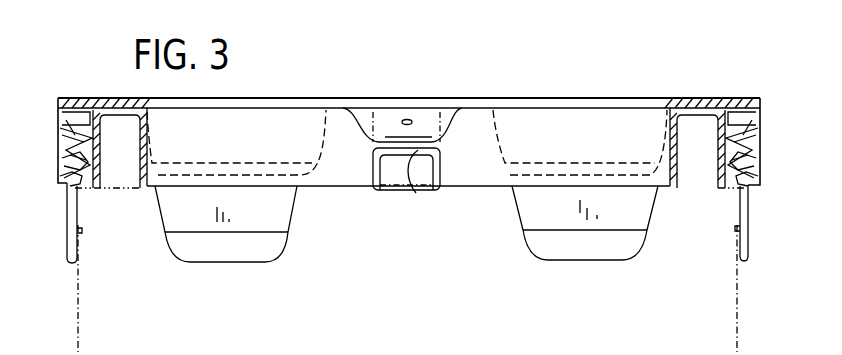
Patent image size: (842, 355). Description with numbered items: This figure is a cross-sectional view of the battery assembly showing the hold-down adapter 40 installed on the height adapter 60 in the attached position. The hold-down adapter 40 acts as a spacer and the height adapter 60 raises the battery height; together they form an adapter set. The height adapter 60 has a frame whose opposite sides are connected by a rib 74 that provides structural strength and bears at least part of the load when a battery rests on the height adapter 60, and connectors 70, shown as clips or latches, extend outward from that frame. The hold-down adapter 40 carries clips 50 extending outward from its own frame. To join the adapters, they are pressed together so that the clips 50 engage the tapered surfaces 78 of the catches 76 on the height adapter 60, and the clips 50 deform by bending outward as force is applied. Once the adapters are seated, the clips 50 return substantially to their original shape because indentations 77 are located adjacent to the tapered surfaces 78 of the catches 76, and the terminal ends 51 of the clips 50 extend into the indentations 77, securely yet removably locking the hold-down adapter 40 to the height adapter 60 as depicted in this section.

The hold-down adapter 40 is at (487, 100).
The clips 50 is at (59, 111).
The terminal ends 51 is at (78, 160).
The height adapter 60 is at (468, 157).
The connectors 70 is at (69, 229).
The rib 74 is at (415, 197).
The catches 76 is at (87, 138).
The indentations 77 is at (70, 176).
The tapered surfaces 78 is at (80, 120).